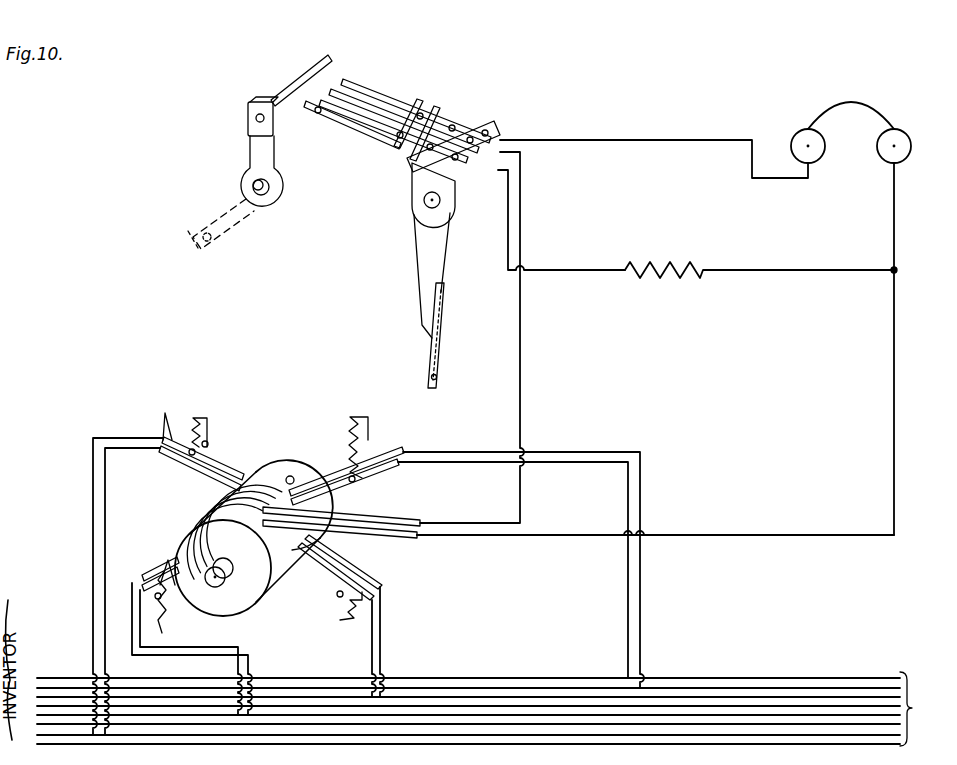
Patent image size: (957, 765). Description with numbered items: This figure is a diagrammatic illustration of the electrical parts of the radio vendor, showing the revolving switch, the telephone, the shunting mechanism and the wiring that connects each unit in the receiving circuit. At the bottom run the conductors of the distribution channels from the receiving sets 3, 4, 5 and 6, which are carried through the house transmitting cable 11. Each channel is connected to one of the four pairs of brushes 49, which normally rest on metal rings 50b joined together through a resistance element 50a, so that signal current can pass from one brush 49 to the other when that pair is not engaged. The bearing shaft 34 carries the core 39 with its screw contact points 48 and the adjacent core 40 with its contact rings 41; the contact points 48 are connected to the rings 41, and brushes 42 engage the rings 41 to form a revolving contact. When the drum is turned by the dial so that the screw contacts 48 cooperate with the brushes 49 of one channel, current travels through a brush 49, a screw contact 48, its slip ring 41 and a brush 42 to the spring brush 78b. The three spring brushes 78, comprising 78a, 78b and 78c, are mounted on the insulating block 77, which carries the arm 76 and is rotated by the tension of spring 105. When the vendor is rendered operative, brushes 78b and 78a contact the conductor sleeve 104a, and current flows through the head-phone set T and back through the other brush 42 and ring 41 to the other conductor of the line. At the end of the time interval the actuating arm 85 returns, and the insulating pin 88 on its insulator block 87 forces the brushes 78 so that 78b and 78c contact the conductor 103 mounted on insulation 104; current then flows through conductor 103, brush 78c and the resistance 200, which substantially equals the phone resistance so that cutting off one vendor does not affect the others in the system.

The insulating pin 88 is at (293, 82).
The insulator block 87 is at (250, 124).
The actuating arm 85 is at (266, 151).
The contact brushes 78 is at (358, 102).
The spring brush 78a is at (345, 80).
The spring brush 78b is at (334, 91).
The spring brush 78c is at (322, 112).
The insulation 104 is at (440, 108).
The conductor sleeve 104a is at (425, 100).
The insulating block 77 is at (486, 126).
The conductor 103 is at (405, 148).
The arm 76 is at (430, 252).
The spring 105 is at (441, 353).
The resistance 200 is at (697, 262).
The head-phone set T is at (806, 79).
The brushes 49 is at (198, 439).
The resistance element 50a is at (370, 420).
The metal rings 50b is at (208, 442).
The core 39 is at (282, 460).
The contact points 48 is at (293, 478).
The contact rings 41 is at (228, 496).
The bearing shaft 34 is at (215, 572).
The brushes 42 is at (402, 517).
The core 40 is at (245, 600).
The house transmitting cable 11 is at (490, 709).
The receiving set 3 is at (895, 678).
The receiving set 4 is at (895, 698).
The receiving set 5 is at (895, 715).
The receiving set 6 is at (895, 735).